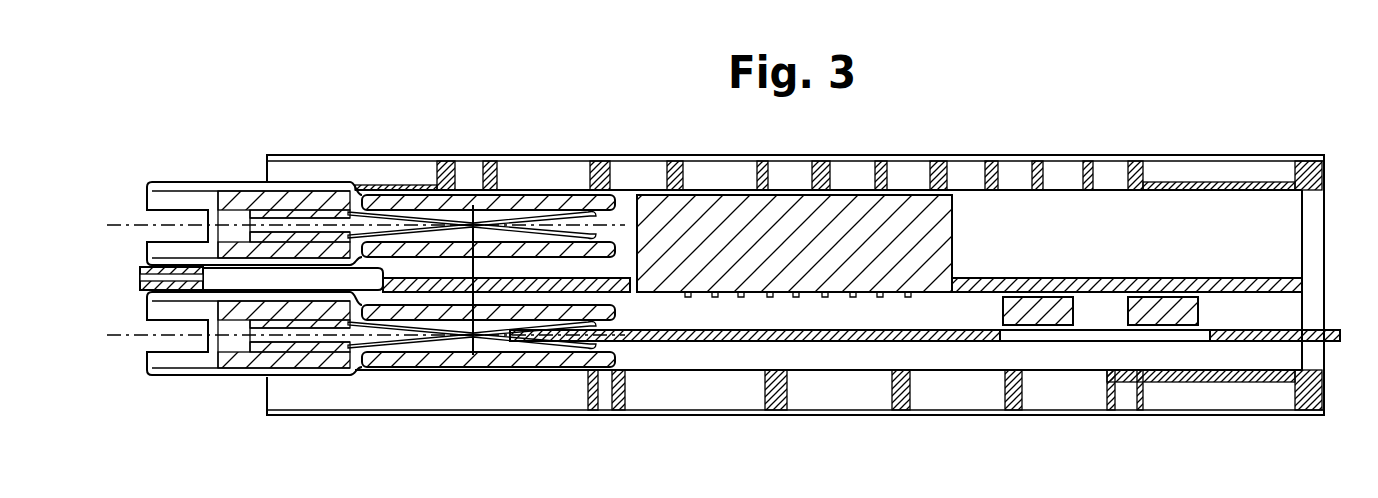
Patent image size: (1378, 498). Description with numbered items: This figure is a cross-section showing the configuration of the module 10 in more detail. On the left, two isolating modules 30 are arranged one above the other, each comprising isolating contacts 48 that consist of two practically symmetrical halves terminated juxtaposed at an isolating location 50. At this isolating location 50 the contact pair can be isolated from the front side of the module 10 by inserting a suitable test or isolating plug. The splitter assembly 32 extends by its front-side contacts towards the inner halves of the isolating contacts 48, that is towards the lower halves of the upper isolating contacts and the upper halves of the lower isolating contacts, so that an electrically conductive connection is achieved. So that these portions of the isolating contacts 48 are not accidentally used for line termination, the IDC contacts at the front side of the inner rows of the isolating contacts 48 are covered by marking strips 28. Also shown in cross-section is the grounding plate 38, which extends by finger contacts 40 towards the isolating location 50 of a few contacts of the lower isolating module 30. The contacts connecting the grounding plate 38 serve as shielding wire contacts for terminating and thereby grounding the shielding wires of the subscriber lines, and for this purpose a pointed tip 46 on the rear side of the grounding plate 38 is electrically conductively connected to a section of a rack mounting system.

The module 10 is at (308, 117).
The marking strips 28 is at (140, 290).
The isolating modules 30 is at (229, 182).
The splitter assembly 32 is at (1097, 278).
The grounding plate 38 is at (738, 342).
The finger contacts 40 is at (550, 342).
The pointed tip 46 is at (1340, 340).
The isolating contacts 48 is at (407, 215).
The isolating location 50 is at (495, 226).